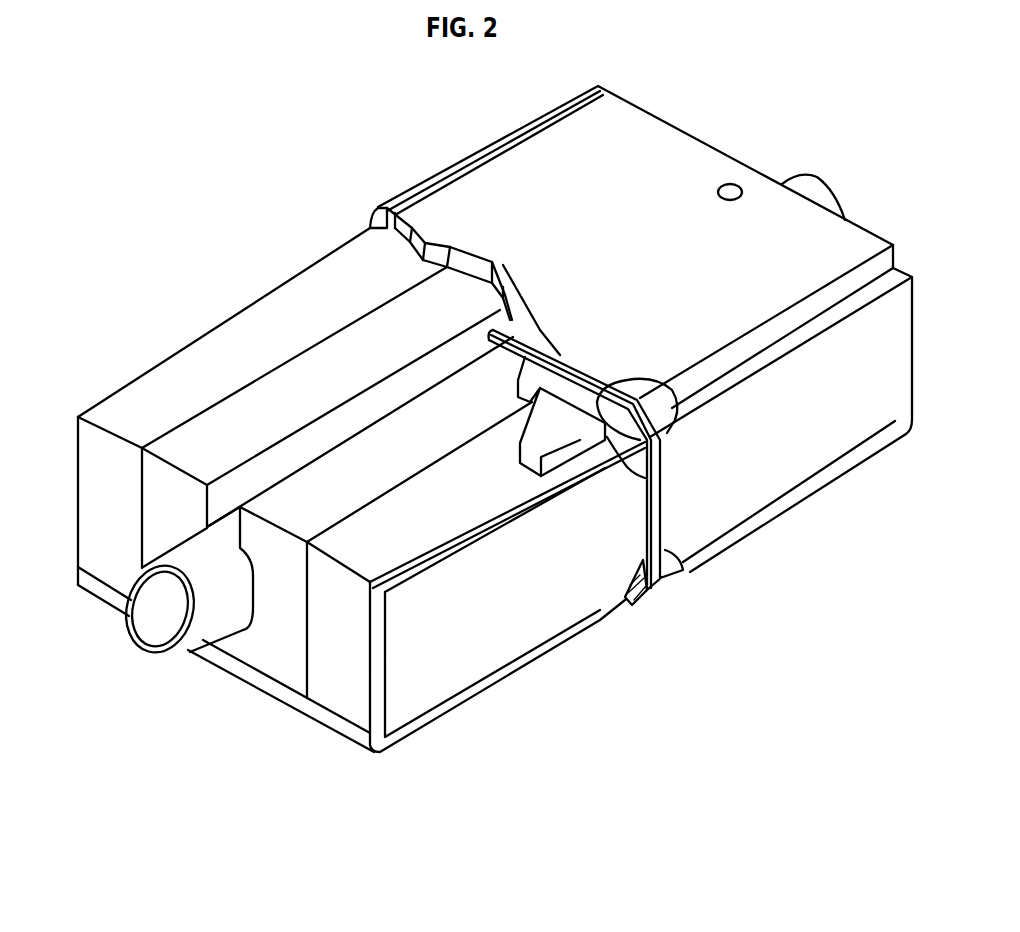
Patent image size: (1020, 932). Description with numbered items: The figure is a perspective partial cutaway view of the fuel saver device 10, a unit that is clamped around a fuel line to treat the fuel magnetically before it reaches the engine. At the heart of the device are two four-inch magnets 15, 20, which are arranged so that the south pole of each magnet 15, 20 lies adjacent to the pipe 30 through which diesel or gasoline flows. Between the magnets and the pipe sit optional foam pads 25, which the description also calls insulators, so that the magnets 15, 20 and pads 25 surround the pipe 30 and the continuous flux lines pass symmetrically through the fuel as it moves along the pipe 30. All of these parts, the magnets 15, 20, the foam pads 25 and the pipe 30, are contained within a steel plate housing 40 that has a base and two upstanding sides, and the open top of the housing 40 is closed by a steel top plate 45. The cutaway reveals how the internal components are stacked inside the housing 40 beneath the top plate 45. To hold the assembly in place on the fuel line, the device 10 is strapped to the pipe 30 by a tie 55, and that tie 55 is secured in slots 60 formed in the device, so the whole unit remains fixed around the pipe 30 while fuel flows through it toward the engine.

The fuel saver device 10 is at (794, 107).
The magnet 15 is at (427, 503).
The magnet 20 is at (250, 347).
The foam pads 25 is at (363, 335).
The pipe 30 is at (203, 618).
The steel plate housing 40 is at (713, 422).
The steel top plate 45 is at (548, 162).
The tie 55 is at (667, 577).
The slots 60 is at (673, 440).